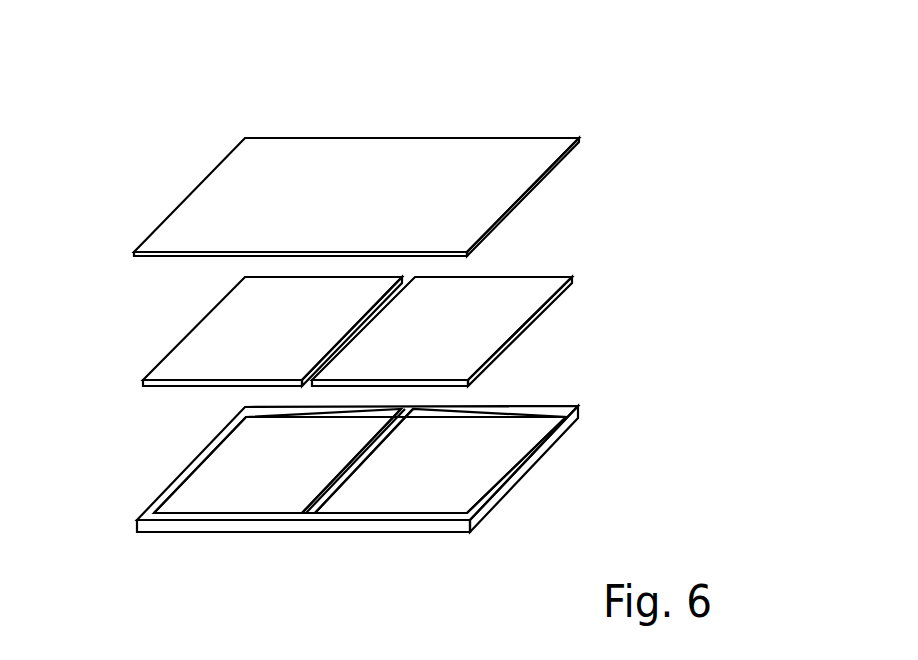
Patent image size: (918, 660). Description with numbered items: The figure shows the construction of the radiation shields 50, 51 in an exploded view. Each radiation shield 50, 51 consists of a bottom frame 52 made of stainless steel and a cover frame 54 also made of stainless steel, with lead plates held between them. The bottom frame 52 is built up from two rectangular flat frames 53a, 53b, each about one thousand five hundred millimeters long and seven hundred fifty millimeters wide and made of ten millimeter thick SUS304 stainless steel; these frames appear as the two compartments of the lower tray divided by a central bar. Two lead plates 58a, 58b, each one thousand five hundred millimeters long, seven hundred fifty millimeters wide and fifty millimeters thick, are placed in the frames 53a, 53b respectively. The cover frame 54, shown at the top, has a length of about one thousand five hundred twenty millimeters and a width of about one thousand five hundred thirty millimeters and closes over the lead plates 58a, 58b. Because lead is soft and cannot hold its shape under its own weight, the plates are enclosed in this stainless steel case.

The radiation shield 50 is at (504, 99).
The radiation shield 51 is at (352, 377).
The bottom frame 52 is at (533, 472).
The rectangular flat frame 53a is at (260, 471).
The rectangular flat frame 53b is at (427, 470).
The cover frame 54 is at (542, 178).
The lead plate 58a is at (187, 333).
The lead plate 58b is at (540, 318).